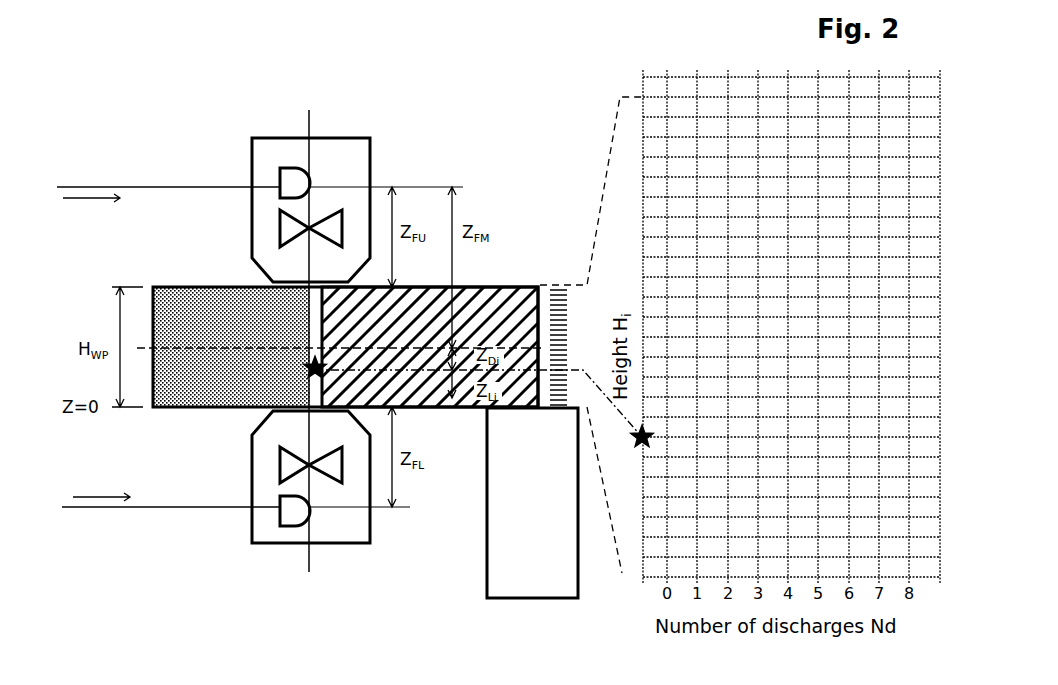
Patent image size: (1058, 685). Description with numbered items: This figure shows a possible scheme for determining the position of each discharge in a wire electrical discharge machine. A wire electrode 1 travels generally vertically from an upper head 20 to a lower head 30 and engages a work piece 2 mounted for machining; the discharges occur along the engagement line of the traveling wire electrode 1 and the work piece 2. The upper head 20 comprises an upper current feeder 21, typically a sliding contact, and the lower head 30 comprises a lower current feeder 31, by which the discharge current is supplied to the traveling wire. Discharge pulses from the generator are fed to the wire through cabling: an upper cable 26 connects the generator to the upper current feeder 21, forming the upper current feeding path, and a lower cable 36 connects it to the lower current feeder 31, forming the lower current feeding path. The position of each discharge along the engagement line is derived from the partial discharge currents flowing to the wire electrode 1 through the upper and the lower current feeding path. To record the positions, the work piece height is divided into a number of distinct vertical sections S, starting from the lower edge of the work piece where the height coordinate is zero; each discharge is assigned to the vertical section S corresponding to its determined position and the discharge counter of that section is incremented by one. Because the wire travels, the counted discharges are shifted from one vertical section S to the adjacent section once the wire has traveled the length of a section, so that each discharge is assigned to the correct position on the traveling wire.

The wire electrode 1 is at (312, 127).
The work piece 2 is at (507, 283).
The upper head 20 is at (222, 137).
The upper current feeder 21 is at (280, 178).
The upper cable 26 is at (140, 187).
The lower head 30 is at (372, 552).
The lower current feeder 31 is at (280, 515).
The lower cable 36 is at (135, 508).
The vertical section S is at (580, 313).